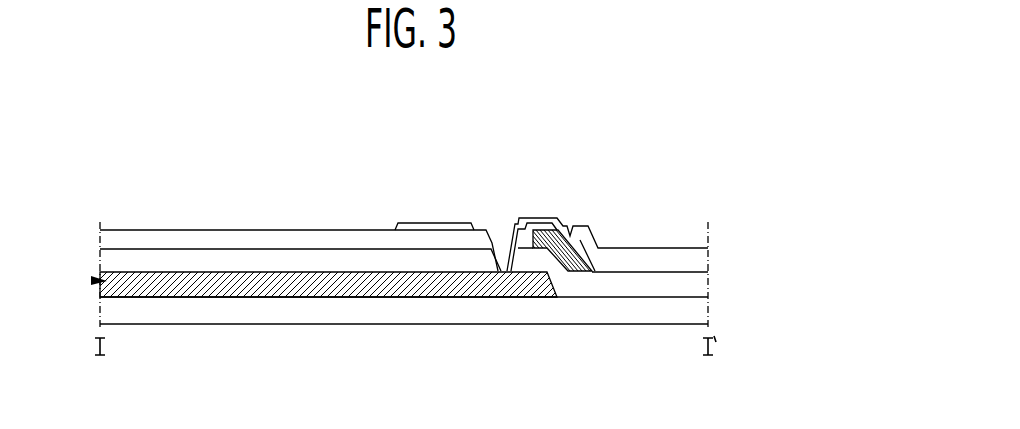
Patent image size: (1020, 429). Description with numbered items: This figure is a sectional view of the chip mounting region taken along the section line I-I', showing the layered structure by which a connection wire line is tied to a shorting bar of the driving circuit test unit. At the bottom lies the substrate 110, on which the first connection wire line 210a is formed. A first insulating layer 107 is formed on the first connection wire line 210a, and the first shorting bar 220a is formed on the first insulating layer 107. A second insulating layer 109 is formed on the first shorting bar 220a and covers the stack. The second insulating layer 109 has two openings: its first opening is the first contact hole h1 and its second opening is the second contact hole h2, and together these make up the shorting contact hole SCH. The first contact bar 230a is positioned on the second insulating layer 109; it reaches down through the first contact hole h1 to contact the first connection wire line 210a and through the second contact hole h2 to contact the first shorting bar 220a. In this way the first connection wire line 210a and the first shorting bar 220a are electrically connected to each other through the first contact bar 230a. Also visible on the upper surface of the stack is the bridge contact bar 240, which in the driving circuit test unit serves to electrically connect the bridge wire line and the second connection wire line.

The second insulating layer 109 is at (711, 252).
The first insulating layer 107 is at (712, 284).
The substrate 110 is at (711, 311).
The first connection wire line 210a is at (248, 288).
The first shorting bar 220a is at (584, 273).
The first contact bar 230a is at (548, 216).
The bridge contact bar 240 is at (422, 222).
The first contact hole h1 is at (503, 227).
The second contact hole h2 is at (571, 212).
The shorting contact hole SCH is at (613, 101).